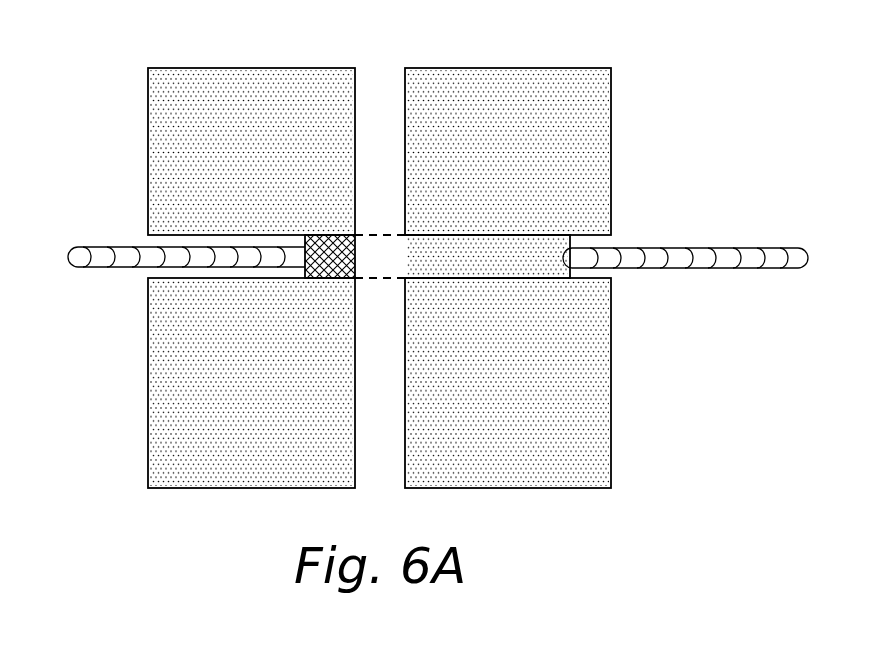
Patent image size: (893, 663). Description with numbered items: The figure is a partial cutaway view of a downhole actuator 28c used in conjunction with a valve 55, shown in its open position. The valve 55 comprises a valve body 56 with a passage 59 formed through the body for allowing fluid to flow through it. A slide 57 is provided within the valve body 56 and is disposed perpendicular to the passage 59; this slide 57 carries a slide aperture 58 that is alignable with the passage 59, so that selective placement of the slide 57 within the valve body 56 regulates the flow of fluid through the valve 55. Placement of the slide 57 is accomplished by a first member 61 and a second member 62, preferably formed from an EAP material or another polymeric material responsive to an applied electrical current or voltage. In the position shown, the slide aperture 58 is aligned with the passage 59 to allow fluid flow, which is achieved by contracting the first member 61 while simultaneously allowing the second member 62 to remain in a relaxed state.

The downhole actuator 28c is at (654, 178).
The valve 55 is at (621, 417).
The valve body 56 is at (578, 85).
The slide 57 is at (573, 270).
The slide aperture 58 is at (384, 280).
The passage 59 is at (373, 86).
The first member 61 is at (768, 256).
The second member 62 is at (86, 247).